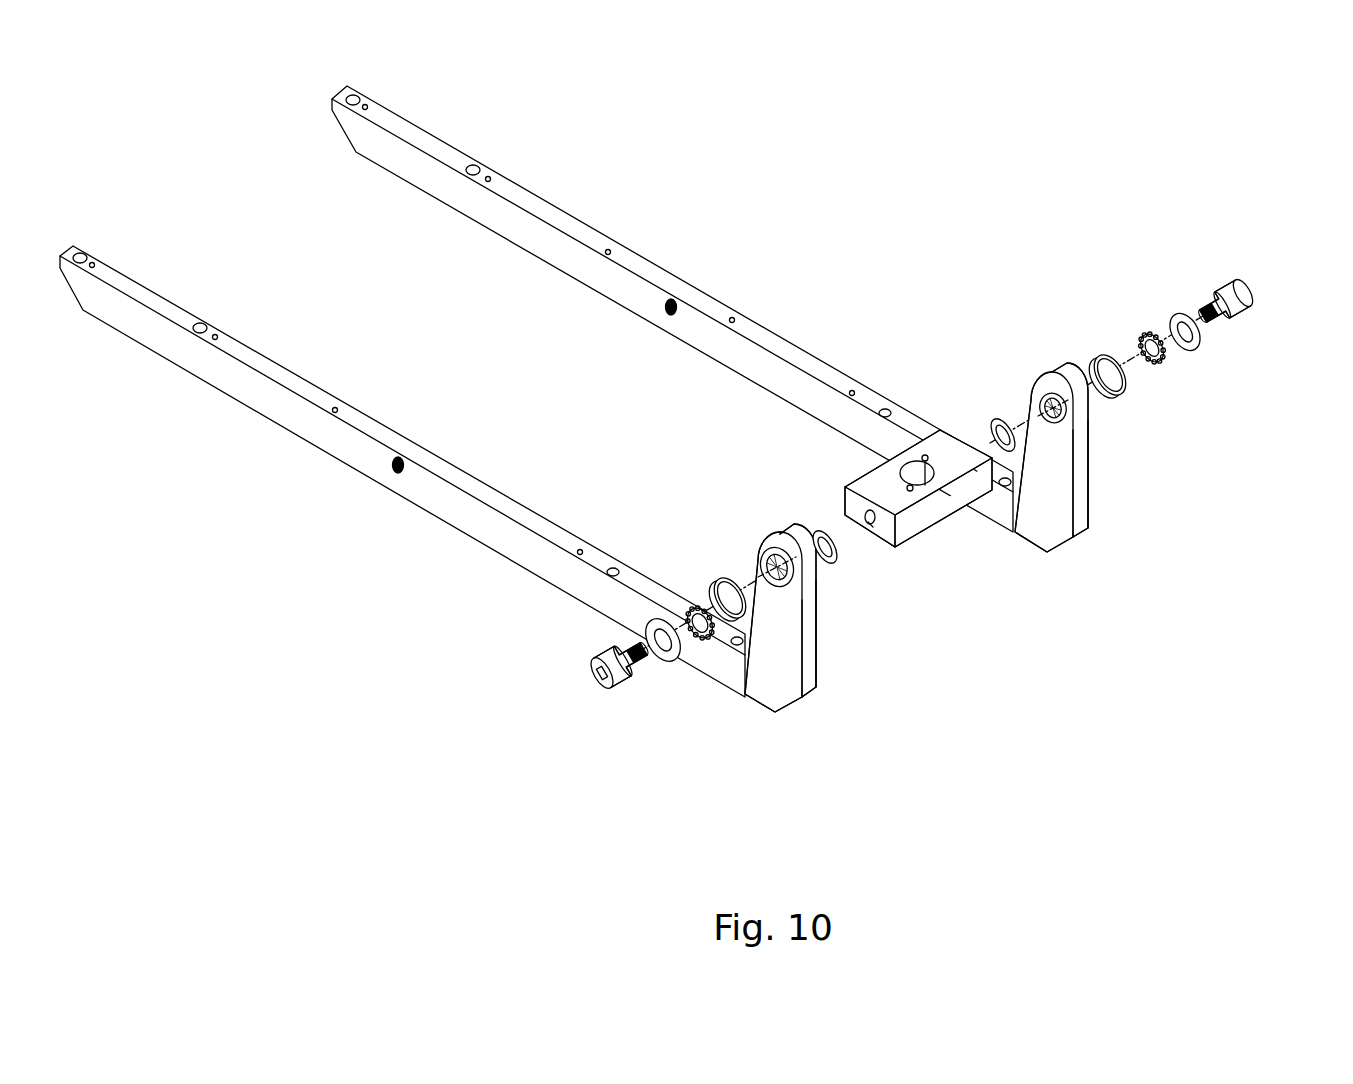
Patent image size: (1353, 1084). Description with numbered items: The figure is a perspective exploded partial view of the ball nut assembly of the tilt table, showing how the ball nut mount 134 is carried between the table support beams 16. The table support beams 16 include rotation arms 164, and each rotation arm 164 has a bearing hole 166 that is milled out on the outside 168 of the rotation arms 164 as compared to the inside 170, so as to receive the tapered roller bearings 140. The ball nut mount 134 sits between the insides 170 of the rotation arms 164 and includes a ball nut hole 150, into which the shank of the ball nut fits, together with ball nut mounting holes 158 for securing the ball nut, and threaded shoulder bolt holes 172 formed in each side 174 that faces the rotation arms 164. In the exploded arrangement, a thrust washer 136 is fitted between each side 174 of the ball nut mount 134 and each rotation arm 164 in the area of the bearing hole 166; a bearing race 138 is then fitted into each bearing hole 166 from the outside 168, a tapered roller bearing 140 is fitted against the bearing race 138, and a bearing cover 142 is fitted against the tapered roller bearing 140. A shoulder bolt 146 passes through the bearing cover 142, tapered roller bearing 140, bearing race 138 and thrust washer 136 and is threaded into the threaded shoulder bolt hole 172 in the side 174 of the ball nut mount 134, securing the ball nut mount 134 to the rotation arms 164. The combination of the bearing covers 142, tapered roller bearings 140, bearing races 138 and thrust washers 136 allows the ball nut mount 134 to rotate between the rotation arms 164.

The table support beams 16 is at (523, 187).
The ball nut mount 134 is at (848, 491).
The thrust washers 136 is at (838, 565).
The bearing races 138 is at (729, 622).
The tapered roller bearings 140 is at (703, 633).
The bearing covers 142 is at (660, 660).
The shoulder bolts 146 is at (603, 657).
The ball nut hole 150 is at (905, 472).
The ball nut mounting holes 158 is at (922, 455).
The rotation arms 164 is at (806, 692).
The bearing hole 166 is at (795, 590).
The outside 168 is at (767, 676).
The inside 170 is at (818, 643).
The threaded shoulder bolt holes 172 is at (873, 521).
The side 174 is at (855, 505).